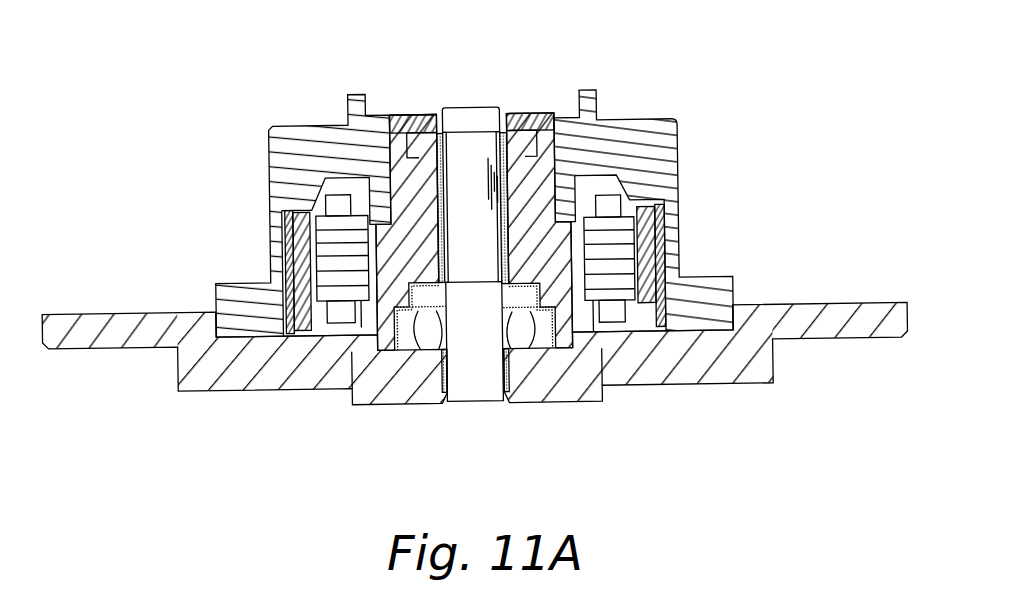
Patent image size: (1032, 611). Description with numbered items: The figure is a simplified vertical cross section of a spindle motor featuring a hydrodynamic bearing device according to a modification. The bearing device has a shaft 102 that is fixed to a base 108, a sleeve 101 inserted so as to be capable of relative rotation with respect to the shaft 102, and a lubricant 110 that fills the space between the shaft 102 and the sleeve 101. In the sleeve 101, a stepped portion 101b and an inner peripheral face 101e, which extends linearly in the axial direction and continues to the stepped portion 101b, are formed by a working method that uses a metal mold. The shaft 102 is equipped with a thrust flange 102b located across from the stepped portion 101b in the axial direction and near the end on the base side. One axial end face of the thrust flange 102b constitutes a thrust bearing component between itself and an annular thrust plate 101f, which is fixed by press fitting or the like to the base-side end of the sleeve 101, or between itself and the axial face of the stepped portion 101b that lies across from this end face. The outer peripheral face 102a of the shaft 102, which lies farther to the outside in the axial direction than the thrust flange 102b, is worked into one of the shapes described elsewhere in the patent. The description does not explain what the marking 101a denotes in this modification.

The sleeve 101 is at (343, 367).
The upper end face of bearing holder 101a is at (431, 123).
The stepped portion 101b is at (390, 367).
The inner peripheral face 101e is at (443, 117).
The annular thrust plate 101f is at (437, 390).
The shaft 102 is at (492, 388).
The outer peripheral face 102a is at (508, 115).
The thrust flange 102b is at (533, 367).
The base 108 is at (693, 367).
The lubricant 110 is at (573, 380).